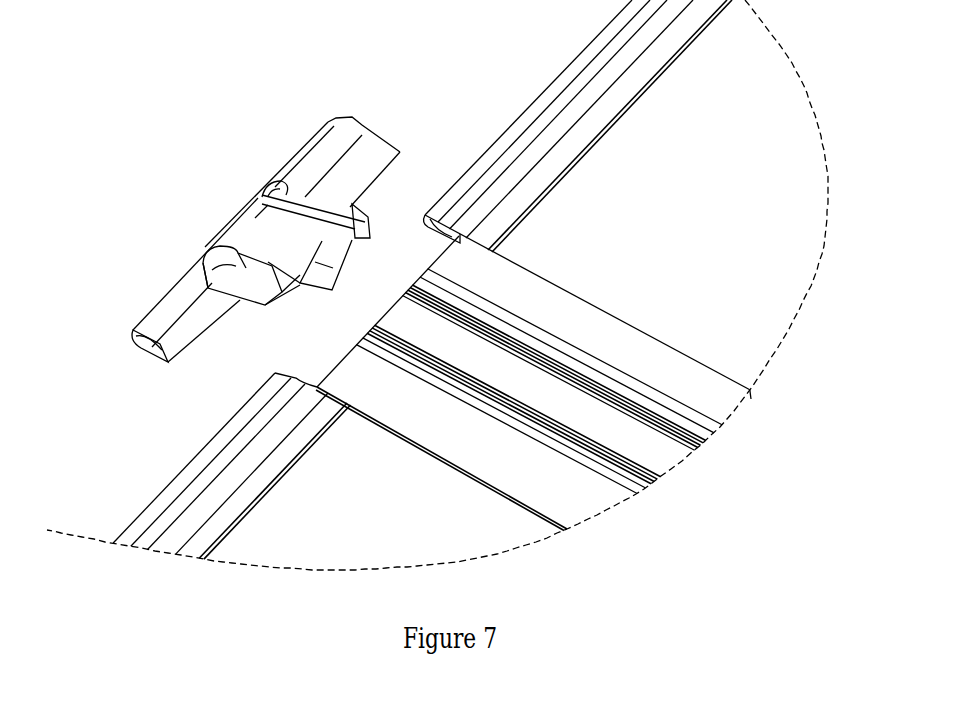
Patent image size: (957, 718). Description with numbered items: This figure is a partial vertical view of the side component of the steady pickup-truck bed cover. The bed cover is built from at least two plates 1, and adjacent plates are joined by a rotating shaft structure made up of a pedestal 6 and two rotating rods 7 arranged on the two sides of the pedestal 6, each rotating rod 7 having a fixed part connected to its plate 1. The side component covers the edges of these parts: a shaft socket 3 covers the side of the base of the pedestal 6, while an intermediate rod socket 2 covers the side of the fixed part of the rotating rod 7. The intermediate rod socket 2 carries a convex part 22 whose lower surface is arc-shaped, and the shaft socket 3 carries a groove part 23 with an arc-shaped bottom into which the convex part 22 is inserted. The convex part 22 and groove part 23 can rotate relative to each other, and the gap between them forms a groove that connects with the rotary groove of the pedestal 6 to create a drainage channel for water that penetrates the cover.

The plate 1 is at (747, 277).
The intermediate rod socket 2 is at (312, 147).
The shaft socket 3 is at (243, 227).
The pedestal 6 is at (630, 457).
The rotating rod 7 is at (678, 388).
The convex part 22 is at (270, 185).
The groove part 23 is at (208, 257).